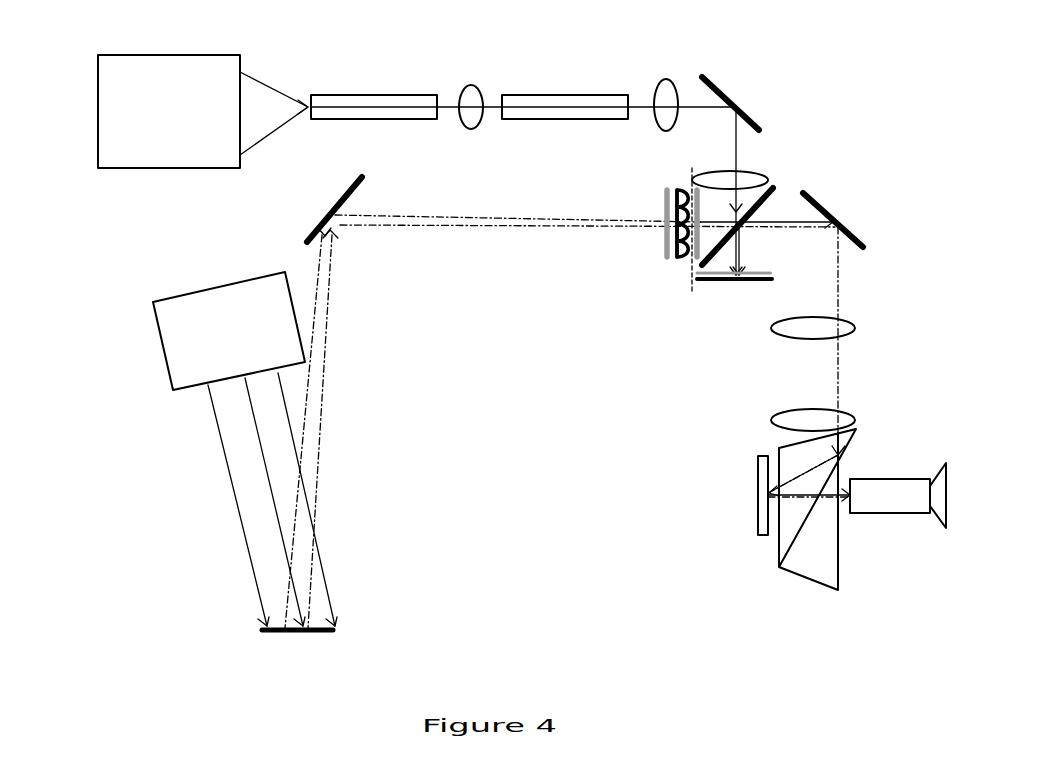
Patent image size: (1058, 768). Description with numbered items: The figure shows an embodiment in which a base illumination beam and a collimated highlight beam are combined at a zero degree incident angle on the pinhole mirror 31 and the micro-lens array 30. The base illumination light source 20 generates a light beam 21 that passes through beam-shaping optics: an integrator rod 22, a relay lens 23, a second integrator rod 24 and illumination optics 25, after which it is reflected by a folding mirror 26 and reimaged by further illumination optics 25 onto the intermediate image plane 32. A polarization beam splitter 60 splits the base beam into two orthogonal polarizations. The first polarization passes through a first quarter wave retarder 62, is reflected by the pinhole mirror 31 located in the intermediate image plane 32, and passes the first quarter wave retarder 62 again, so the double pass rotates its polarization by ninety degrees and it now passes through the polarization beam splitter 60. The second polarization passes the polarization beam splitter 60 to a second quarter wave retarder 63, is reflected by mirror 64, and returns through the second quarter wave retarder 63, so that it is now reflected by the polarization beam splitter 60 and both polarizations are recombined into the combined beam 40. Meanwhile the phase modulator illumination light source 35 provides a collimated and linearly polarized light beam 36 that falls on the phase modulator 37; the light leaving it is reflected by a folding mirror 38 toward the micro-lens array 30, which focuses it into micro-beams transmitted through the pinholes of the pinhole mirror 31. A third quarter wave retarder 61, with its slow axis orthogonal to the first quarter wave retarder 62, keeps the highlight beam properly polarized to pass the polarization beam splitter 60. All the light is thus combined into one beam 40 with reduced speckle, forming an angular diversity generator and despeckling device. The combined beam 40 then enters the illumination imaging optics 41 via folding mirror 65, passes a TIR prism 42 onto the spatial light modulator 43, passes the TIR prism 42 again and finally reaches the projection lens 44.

The base illumination light source 20 is at (98, 107).
The light beam 21 is at (258, 125).
The integrator rod 22 is at (388, 95).
The relay lens 23 is at (470, 83).
The second integrator rod 24 is at (558, 95).
The illumination optics 25 is at (717, 175).
The folding mirror 26 is at (723, 92).
The micro-lens array 30 is at (690, 175).
The pinhole mirror 31 is at (682, 223).
The intermediate image plane 32 is at (683, 245).
The phase modulator illumination light source 35 is at (162, 353).
The collimated and linearly polarized light beam 36 is at (242, 407).
The phase modulator 37 is at (302, 632).
The folding mirror 38 is at (342, 187).
The combined beam 40 is at (787, 220).
The illumination imaging optics 41 is at (783, 335).
The TIR prism 42 is at (780, 568).
The spatial light modulator 43 is at (757, 497).
The projection lens 44 is at (915, 515).
The polarization beam splitter 60 is at (762, 190).
The third quarter wave retarder 61 is at (667, 228).
The first quarter wave retarder 62 is at (693, 268).
The second quarter wave retarder 63 is at (748, 280).
The mirror 64 is at (768, 280).
The folding mirror 65 is at (830, 209).